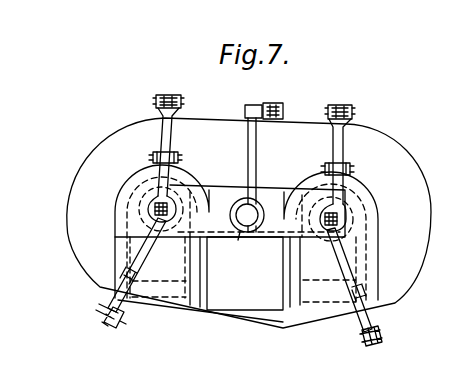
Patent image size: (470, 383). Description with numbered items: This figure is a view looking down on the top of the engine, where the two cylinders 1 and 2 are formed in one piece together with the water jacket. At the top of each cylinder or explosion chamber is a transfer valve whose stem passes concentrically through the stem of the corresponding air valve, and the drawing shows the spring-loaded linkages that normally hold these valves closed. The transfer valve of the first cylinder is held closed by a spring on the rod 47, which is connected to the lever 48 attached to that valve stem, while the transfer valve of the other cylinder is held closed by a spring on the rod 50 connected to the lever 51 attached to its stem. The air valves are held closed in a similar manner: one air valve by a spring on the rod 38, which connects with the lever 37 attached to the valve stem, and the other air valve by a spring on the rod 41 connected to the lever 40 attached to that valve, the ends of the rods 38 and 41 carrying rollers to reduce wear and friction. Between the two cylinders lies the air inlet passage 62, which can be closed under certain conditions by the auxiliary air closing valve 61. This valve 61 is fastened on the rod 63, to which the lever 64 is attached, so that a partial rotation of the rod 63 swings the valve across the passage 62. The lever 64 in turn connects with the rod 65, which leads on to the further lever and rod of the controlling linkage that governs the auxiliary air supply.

The cylinder 1 is at (425, 195).
The cylinder 2 is at (74, 182).
The lever 37 is at (350, 270).
The rod 38 is at (382, 340).
The lever 40 is at (134, 266).
The rod 41 is at (110, 326).
The rod 47 is at (170, 95).
The lever 48 is at (165, 133).
The rod 50 is at (340, 102).
The lever 51 is at (339, 158).
The auxiliary air closing valve 61 is at (237, 240).
The passage 62 is at (265, 209).
The rod 63 is at (256, 150).
The lever 64 is at (260, 105).
The rod 65 is at (283, 110).